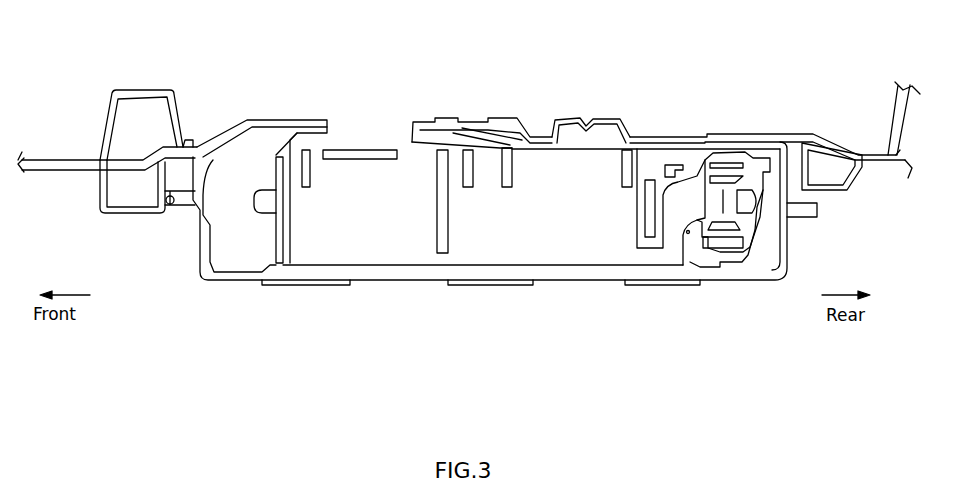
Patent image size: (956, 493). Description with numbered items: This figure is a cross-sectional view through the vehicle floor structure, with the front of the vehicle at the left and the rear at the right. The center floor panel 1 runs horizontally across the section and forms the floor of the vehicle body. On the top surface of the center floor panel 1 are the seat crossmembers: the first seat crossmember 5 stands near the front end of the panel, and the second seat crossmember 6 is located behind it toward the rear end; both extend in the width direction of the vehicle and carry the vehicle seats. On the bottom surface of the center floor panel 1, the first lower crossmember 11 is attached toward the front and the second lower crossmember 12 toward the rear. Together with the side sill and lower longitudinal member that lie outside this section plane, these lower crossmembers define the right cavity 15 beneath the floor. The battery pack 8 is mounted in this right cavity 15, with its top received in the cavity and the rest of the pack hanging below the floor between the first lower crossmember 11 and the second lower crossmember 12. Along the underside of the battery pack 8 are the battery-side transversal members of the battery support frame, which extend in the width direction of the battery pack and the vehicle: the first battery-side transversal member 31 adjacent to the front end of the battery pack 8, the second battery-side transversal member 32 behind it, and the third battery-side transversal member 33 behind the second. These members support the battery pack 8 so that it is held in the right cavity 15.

The center floor panel 1 is at (53, 158).
The first seat crossmember 5 is at (143, 92).
The first lower crossmember 11 is at (127, 214).
The right cavity 15 is at (187, 173).
The second seat crossmember 6 is at (613, 118).
The battery pack 8 is at (375, 273).
The second lower crossmember 12 is at (832, 192).
The first battery-side transversal member 31 is at (292, 286).
The second battery-side transversal member 32 is at (482, 286).
The third battery-side transversal member 33 is at (645, 286).